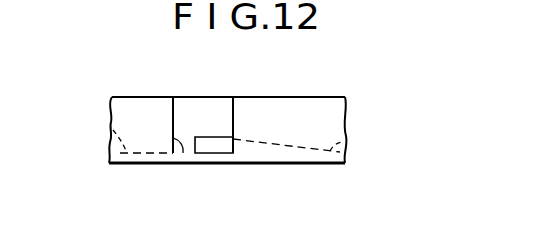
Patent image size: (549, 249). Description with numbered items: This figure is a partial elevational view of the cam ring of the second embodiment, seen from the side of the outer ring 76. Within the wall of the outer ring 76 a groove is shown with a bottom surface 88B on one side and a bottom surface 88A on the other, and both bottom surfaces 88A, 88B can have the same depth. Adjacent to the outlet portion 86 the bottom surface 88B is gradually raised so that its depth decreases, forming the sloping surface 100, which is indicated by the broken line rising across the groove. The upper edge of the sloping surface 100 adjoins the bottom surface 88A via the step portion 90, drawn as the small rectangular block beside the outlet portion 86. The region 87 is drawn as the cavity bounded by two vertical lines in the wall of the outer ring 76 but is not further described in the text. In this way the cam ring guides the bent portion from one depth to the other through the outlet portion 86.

The outer ring 76 is at (145, 113).
The cavity region 87 is at (213, 110).
The outlet portion 86 is at (183, 153).
The step portion 90 is at (217, 148).
The sloping surface 100 is at (257, 139).
The bottom surface 88A is at (110, 128).
The bottom surface 88B is at (346, 142).